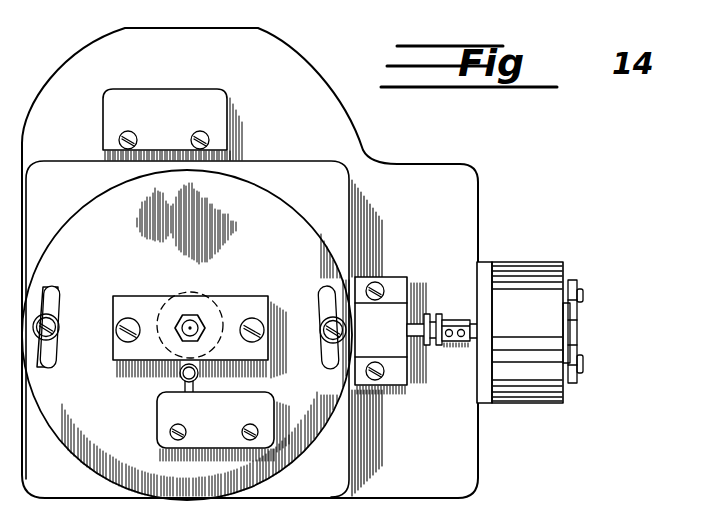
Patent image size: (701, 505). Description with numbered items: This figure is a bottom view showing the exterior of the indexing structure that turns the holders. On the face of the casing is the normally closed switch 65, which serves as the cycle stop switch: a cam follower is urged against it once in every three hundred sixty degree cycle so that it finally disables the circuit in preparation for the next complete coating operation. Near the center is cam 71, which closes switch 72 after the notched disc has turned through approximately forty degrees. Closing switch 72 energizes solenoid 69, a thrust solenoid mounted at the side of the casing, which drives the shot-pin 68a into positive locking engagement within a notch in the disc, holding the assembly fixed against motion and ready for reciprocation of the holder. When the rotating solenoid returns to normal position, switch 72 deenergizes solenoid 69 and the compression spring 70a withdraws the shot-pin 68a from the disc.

The normally closed switch 65 is at (180, 88).
The cam 71 is at (215, 309).
The switch 72 is at (157, 405).
The shot-pin 68a is at (453, 320).
The compression spring 70a is at (429, 342).
The solenoid 69 is at (549, 404).